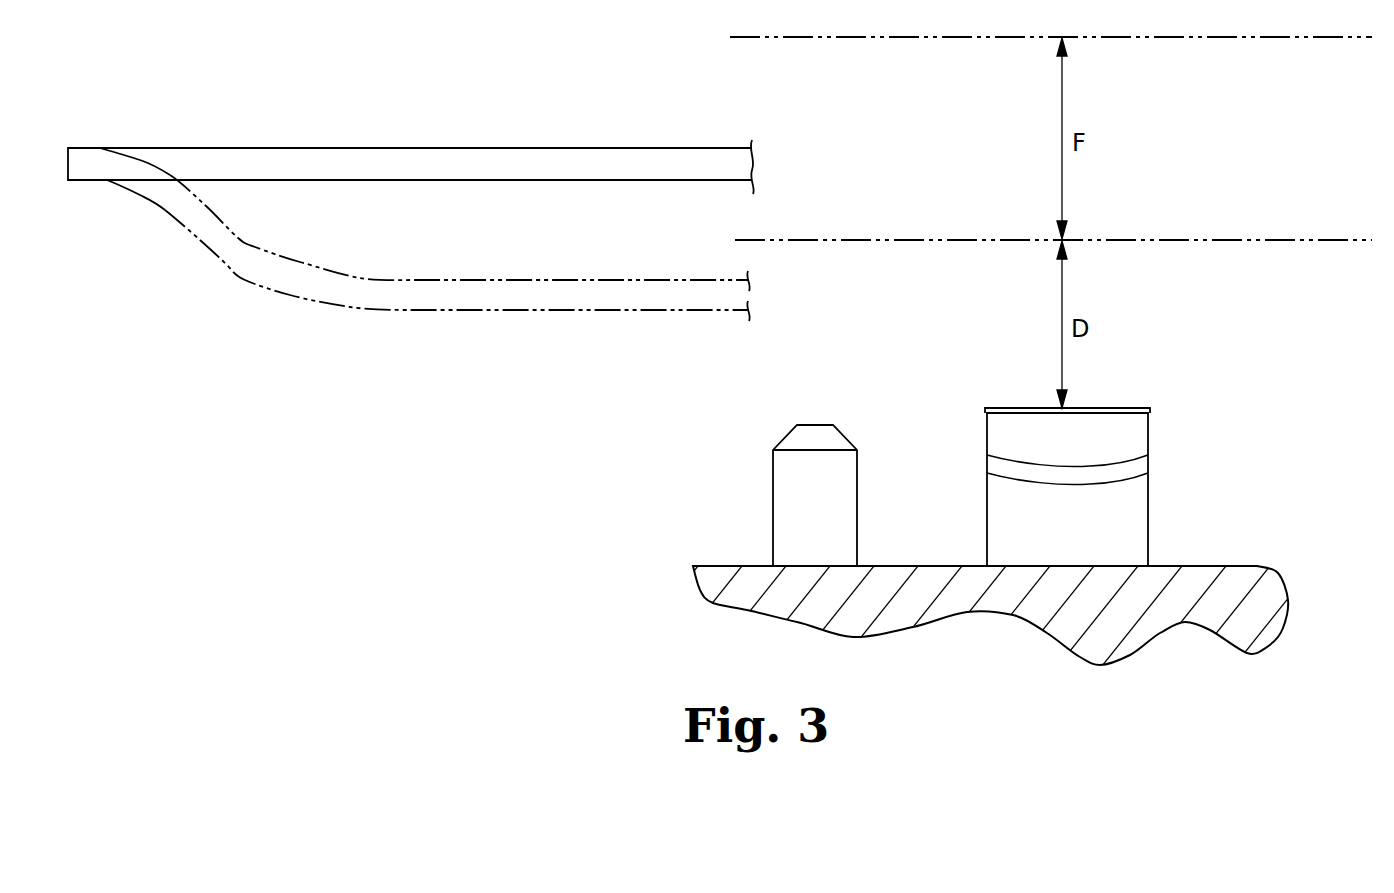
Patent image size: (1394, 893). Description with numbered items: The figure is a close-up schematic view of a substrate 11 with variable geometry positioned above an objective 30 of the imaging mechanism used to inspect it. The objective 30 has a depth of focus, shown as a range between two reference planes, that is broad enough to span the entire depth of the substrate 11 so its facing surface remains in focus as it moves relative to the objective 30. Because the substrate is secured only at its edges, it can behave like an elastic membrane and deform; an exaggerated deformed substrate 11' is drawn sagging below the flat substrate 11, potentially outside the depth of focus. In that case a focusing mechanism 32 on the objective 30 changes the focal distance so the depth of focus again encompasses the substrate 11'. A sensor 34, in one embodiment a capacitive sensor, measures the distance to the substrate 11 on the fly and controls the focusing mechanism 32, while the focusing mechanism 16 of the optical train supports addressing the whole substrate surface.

The substrate 11 is at (411, 138).
The deformed substrate 11' is at (425, 268).
The focusing mechanism 16 is at (1292, 622).
The objective 30 is at (1148, 423).
The focusing mechanism 32 is at (1148, 460).
The sensor 34 is at (773, 478).